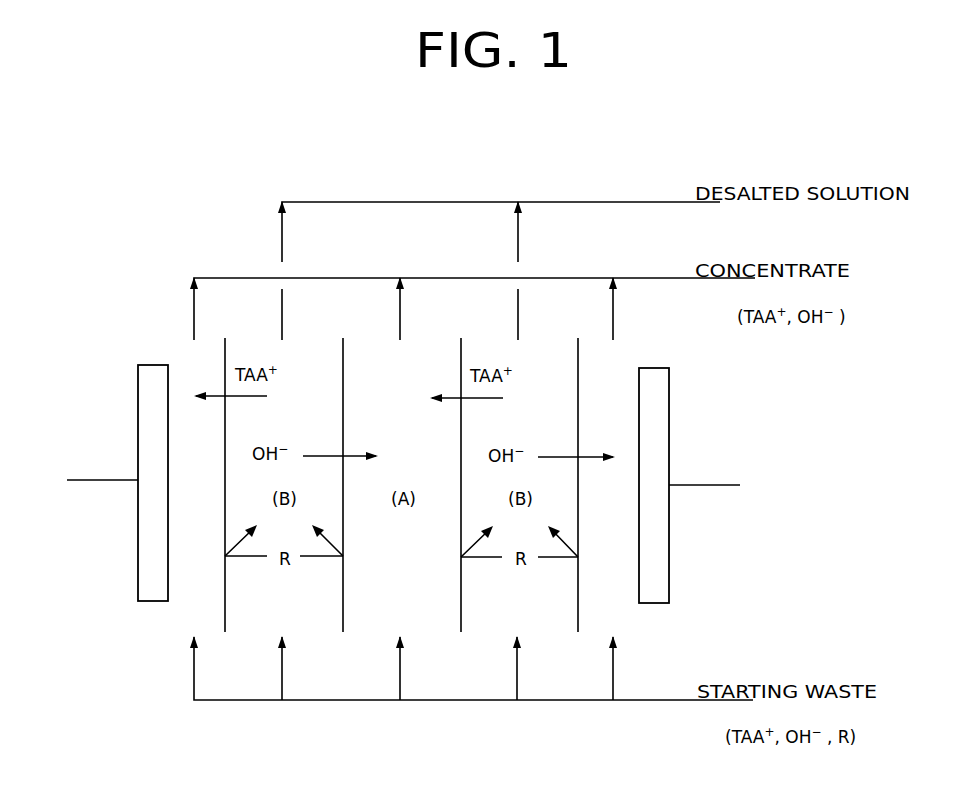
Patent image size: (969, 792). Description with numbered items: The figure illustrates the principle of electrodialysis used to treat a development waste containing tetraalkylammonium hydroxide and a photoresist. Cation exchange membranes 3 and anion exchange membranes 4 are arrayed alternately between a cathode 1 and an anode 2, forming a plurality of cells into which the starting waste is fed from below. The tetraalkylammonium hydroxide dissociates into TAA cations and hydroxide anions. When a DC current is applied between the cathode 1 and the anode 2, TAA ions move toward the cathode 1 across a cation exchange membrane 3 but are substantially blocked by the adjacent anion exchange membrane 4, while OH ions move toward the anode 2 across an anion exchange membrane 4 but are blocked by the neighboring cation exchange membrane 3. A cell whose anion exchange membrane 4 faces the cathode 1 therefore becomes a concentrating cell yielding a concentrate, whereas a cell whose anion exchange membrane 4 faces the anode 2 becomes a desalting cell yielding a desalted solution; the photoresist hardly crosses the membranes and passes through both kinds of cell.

The cathode 1 is at (138, 561).
The anode 2 is at (669, 565).
The cation exchange membrane 3 is at (225, 617).
The anion exchange membrane 4 is at (343, 605).